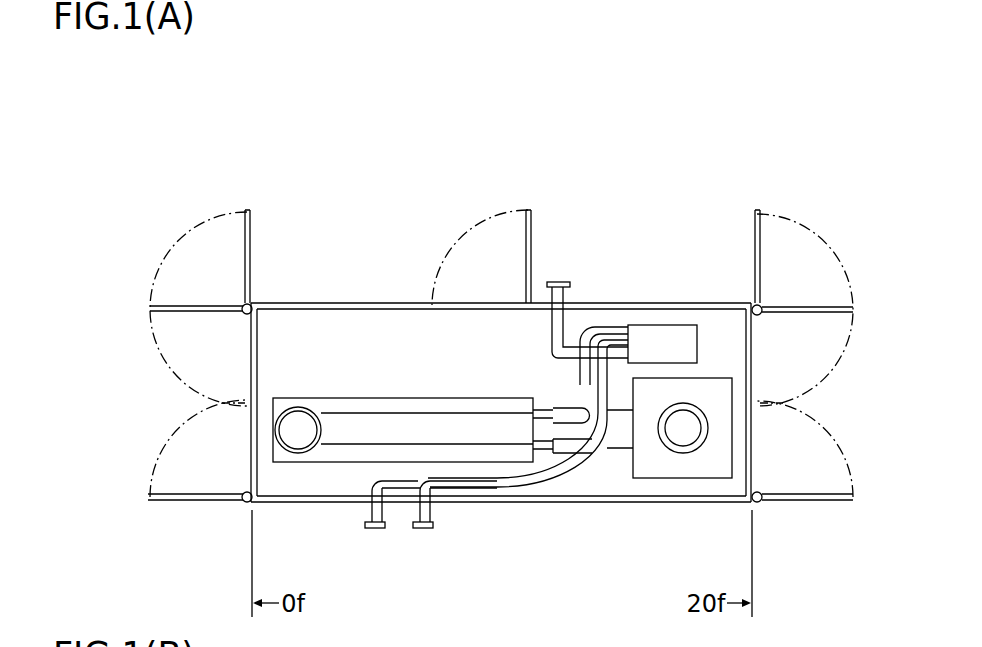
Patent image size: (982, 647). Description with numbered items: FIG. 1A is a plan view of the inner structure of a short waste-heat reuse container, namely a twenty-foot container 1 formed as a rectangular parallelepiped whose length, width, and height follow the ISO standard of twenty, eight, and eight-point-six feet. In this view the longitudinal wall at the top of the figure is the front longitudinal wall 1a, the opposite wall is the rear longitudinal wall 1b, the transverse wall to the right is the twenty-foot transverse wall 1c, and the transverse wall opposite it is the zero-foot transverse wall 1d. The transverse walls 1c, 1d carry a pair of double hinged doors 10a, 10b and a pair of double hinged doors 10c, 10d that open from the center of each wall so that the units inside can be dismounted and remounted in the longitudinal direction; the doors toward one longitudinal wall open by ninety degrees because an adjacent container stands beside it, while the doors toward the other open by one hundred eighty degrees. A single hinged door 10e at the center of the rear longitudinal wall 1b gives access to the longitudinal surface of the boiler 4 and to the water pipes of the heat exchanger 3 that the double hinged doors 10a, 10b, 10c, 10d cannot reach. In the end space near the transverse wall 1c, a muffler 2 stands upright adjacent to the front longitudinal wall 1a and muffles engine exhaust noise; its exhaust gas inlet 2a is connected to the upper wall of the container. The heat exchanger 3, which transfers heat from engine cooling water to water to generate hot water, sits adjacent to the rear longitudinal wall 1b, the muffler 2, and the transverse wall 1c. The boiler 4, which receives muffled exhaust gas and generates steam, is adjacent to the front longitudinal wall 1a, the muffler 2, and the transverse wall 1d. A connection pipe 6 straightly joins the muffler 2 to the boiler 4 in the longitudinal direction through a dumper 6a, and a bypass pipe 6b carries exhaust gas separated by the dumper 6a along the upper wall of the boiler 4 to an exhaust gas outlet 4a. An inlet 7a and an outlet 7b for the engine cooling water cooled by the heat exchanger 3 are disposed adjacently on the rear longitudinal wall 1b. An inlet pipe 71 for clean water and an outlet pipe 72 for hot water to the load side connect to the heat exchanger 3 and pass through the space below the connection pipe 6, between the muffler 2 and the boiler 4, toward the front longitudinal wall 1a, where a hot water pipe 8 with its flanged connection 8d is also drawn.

The 20-f container 1 is at (447, 136).
The front longitudinal wall 1a is at (324, 299).
The rear longitudinal wall 1b is at (317, 510).
The 20-f transverse wall 1c is at (758, 376).
The 0-f transverse wall 1d is at (245, 376).
The muffler 2 is at (710, 470).
The exhaust gas inlet 2a is at (683, 454).
The heat exchanger 3 is at (668, 324).
The boiler 4 is at (402, 396).
The exhaust gas outlet 4a is at (294, 455).
The connection pipe 6 is at (613, 450).
The dumper 6a is at (592, 456).
The bypass pipe 6b is at (500, 446).
The inlet 7a is at (431, 530).
The outlet 7b is at (371, 530).
The inlet pipe 71 is at (458, 490).
The outlet pipe 72 is at (398, 490).
The drain pipe 8 is at (567, 320).
The drain pipe connection port 8d is at (559, 281).
The double hinged door 10a is at (795, 503).
The double hinged door 10b is at (762, 225).
The double hinged door 10c is at (210, 503).
The double hinged door 10d is at (242, 222).
The single hinged door 10e is at (524, 222).